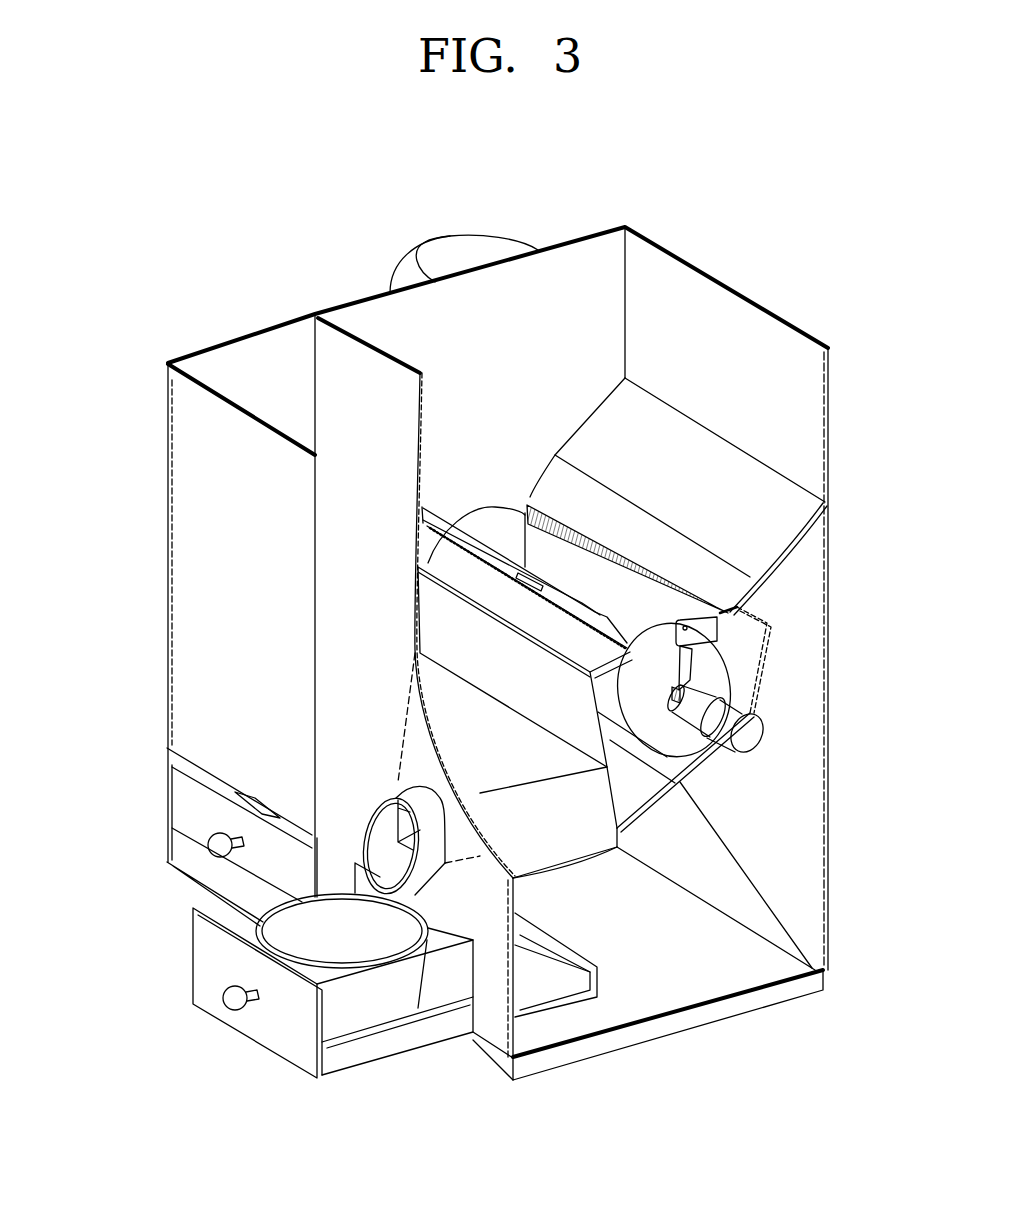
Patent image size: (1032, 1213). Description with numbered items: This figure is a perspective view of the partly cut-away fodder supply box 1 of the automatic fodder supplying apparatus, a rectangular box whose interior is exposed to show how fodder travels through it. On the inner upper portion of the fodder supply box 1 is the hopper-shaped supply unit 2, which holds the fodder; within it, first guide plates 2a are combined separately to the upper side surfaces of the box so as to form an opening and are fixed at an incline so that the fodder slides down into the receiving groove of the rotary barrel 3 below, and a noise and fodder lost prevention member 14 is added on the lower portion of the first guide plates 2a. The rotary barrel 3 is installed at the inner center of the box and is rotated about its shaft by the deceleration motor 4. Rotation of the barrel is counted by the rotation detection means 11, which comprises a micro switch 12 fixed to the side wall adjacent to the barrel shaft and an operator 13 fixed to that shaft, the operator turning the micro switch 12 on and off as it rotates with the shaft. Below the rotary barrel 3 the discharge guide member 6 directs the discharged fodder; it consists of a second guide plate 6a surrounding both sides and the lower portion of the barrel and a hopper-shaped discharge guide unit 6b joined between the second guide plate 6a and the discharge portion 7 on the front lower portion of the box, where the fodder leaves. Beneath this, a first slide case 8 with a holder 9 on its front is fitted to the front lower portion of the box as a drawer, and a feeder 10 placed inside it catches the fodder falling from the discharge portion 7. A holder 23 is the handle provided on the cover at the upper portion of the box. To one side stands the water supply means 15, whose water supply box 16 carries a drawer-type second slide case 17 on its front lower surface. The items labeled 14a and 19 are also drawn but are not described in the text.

The fodder supply box 1 is at (753, 300).
The supply unit 2 is at (787, 402).
The first guide plates 2a is at (457, 517).
The rotary barrel 3 is at (667, 740).
The deceleration motor 4 is at (747, 737).
The discharge guide member 6 is at (677, 800).
The second guide plate 6a is at (758, 616).
The discharge guide unit 6b is at (580, 820).
The discharge portion 7 is at (427, 840).
The first slide case 8 is at (290, 1043).
The holder 9 is at (232, 1000).
The feeder 10 is at (387, 1003).
The rotation detection means 11 is at (705, 658).
The micro switch 12 is at (700, 633).
The operator 13 is at (688, 673).
The noise and fodder lost prevention member 14 is at (670, 572).
The blade holder 14a is at (712, 605).
The water supply means 15 is at (163, 405).
The water supply box 16 is at (165, 578).
The second slide case 17 is at (180, 800).
The cover dome 19 is at (457, 248).
The holder 23 is at (210, 848).